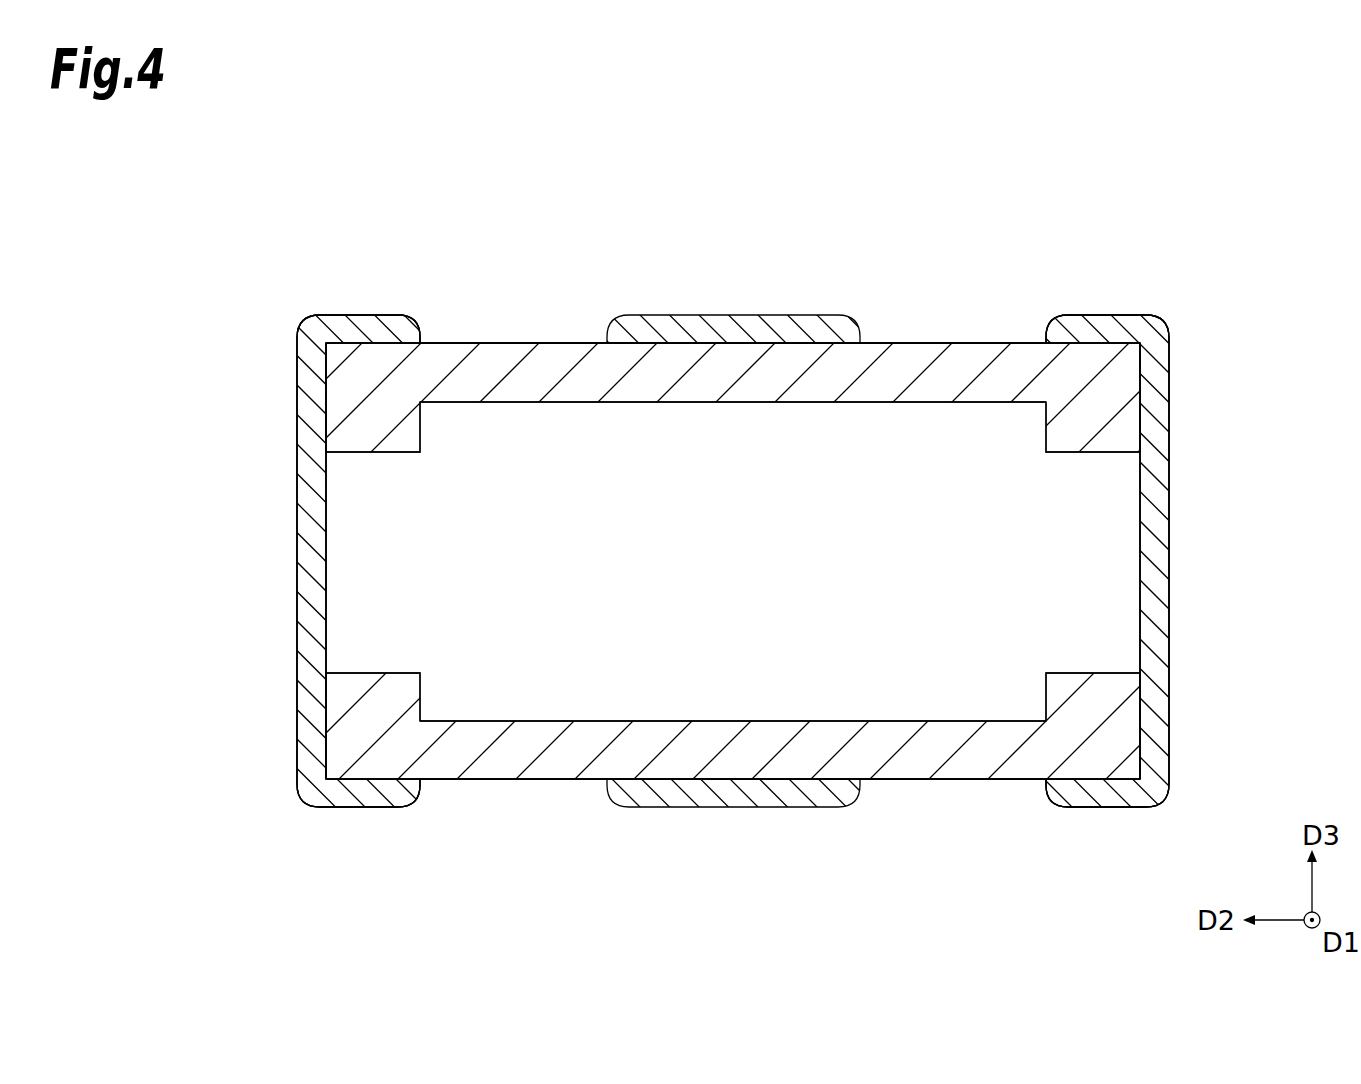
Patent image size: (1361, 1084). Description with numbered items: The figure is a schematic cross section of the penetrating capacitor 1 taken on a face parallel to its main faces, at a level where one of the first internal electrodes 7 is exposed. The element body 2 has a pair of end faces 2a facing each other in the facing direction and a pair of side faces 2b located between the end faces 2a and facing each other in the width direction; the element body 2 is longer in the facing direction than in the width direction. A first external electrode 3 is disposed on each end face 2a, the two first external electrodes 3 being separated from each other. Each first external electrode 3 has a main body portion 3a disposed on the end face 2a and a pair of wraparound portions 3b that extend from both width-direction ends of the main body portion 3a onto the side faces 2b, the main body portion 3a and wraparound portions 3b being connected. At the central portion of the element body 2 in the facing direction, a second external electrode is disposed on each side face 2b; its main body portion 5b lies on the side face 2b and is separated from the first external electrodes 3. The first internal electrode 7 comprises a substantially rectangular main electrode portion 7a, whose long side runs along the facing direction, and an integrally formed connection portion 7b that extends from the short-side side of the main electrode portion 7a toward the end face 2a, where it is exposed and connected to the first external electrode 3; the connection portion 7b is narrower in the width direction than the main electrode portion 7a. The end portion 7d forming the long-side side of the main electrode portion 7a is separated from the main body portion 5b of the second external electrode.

The penetrating capacitor 1 is at (783, 192).
The element body 2 is at (562, 338).
The end face 2a is at (326, 478).
The side face 2b is at (927, 343).
The first external electrode 3 is at (292, 659).
The main body portion 3a is at (297, 429).
The wraparound portion 3b is at (369, 316).
The main body portion 5b is at (683, 316).
The first internal electrode 7 is at (893, 725).
The main electrode portion 7a is at (540, 700).
The connection portion 7b is at (362, 550).
The end portion 7d is at (790, 400).